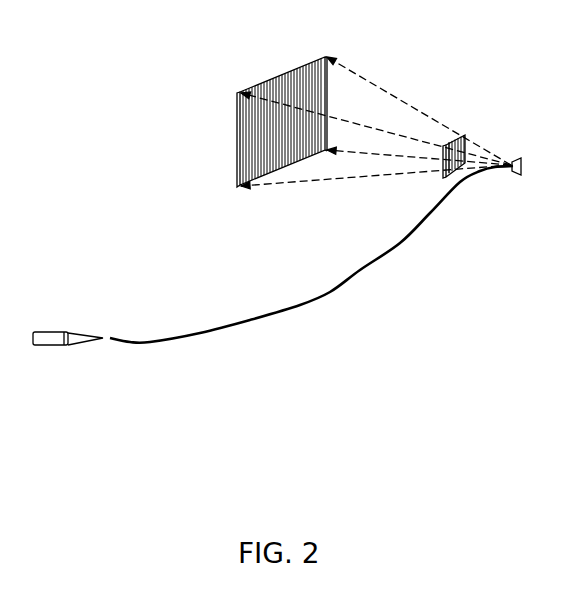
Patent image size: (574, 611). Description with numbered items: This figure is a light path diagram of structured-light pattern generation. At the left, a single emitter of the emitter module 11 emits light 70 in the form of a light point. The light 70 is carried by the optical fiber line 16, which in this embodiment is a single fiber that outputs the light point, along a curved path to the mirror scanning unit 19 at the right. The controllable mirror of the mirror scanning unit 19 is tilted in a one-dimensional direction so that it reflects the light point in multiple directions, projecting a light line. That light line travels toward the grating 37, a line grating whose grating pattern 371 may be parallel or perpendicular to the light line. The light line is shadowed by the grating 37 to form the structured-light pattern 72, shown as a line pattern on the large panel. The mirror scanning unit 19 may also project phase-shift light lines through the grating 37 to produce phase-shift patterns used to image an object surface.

The structured-light pattern 72 is at (293, 66).
The grating 37 is at (452, 140).
The grating pattern 371 is at (465, 155).
The mirror scanning unit 19 is at (518, 160).
The optical fiber line 16 is at (298, 306).
The emitter module 11 is at (52, 332).
The light 70 is at (92, 335).